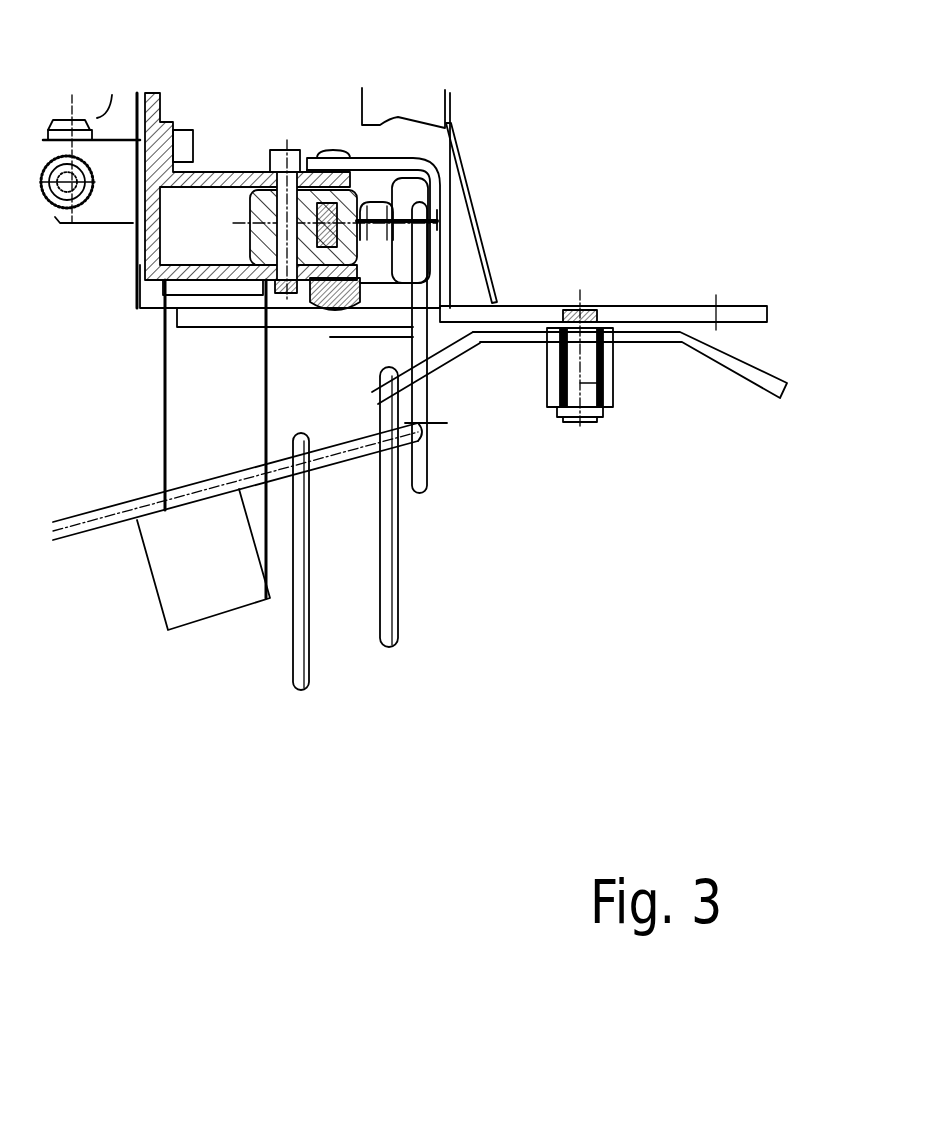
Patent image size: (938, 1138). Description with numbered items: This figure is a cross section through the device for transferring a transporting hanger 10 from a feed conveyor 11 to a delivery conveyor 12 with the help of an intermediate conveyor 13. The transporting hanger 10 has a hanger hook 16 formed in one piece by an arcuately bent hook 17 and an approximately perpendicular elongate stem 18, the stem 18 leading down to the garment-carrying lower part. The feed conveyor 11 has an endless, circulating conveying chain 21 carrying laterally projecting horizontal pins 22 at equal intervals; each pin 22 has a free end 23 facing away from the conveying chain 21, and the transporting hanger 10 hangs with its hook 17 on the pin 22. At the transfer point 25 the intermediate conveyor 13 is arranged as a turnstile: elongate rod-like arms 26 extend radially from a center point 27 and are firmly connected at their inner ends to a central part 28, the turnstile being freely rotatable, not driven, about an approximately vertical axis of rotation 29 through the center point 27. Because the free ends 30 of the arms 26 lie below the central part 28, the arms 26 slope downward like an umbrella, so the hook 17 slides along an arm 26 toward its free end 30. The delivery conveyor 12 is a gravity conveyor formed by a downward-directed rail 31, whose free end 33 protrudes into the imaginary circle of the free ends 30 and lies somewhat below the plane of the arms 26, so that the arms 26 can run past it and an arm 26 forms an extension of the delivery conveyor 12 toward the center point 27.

The transporting hanger 10 is at (422, 548).
The feed conveyor 11 is at (366, 138).
The delivery conveyor 12 is at (347, 490).
The intermediate conveyor 13 is at (607, 288).
The hanger hook 16 is at (412, 340).
The hook 17 is at (422, 182).
The stem 18 is at (241, 477).
The conveying chain 21 is at (347, 163).
The pin 22 is at (409, 126).
The free end 23 is at (374, 203).
The transfer point 25 is at (450, 392).
The arm 26 is at (512, 335).
The center point 27 is at (616, 396).
The central part 28 is at (550, 386).
The axis of rotation 29 is at (627, 421).
The free end 30 is at (377, 396).
The rail 31 is at (93, 540).
The free end 33 is at (417, 430).